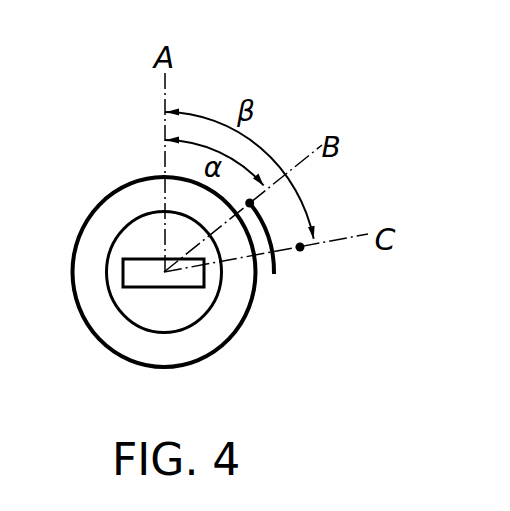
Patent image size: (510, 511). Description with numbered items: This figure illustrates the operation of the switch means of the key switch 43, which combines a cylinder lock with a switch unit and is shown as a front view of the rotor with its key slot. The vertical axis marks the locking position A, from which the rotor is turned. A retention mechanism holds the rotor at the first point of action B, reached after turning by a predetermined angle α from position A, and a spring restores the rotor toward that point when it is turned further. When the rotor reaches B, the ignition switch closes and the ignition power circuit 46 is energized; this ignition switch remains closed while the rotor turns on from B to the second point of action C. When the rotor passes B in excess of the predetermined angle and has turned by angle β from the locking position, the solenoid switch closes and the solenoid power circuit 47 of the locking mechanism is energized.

The key switch 43 is at (108, 352).
The ignition power circuit 46 is at (265, 229).
The solenoid power circuit 47 is at (300, 247).